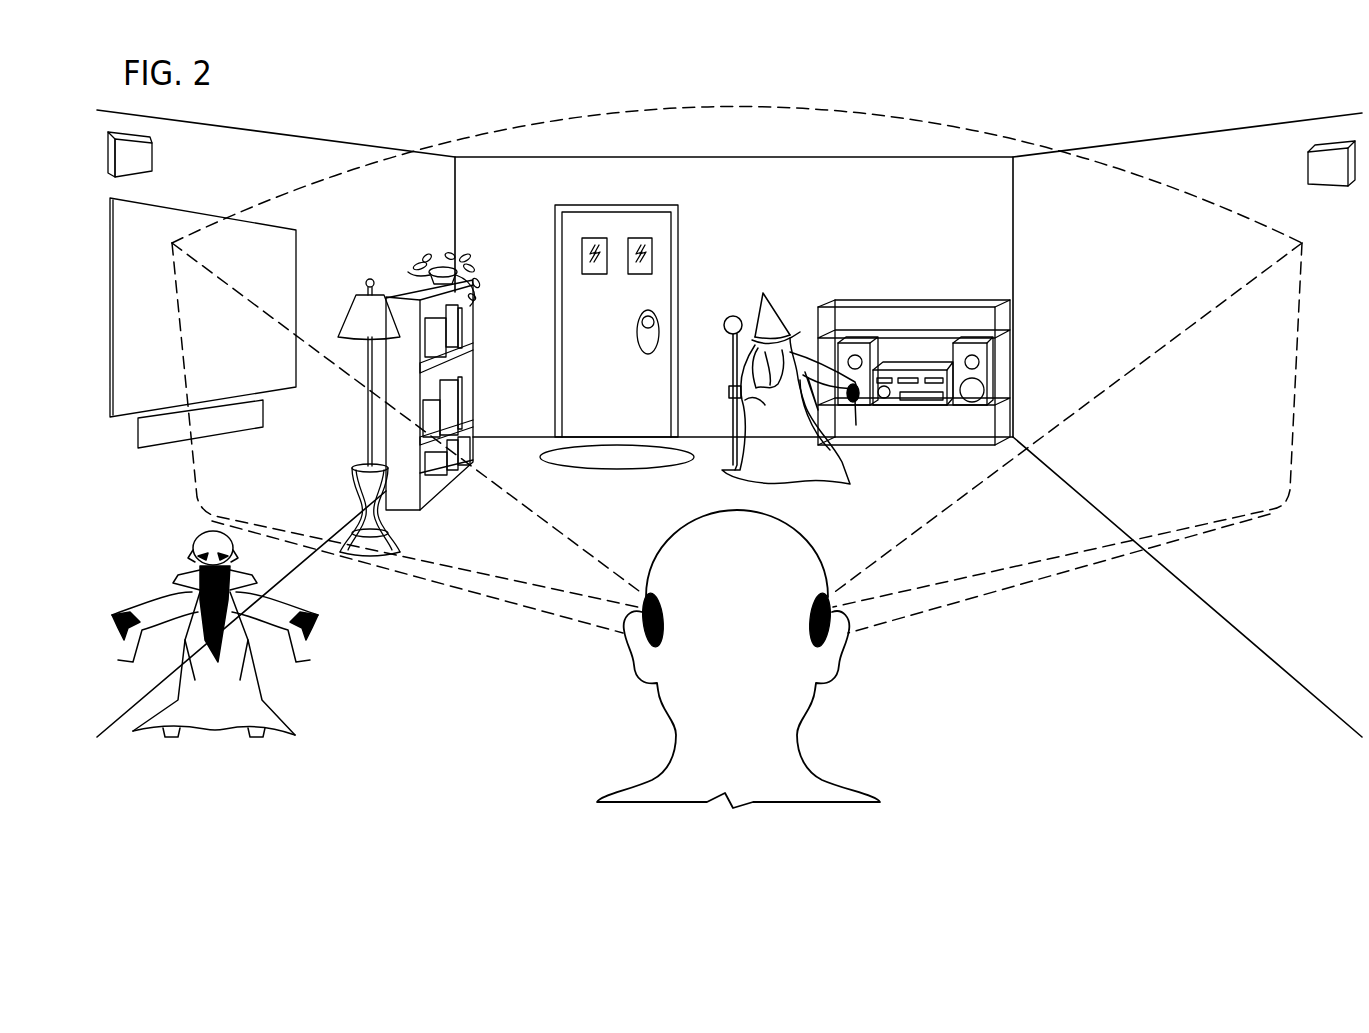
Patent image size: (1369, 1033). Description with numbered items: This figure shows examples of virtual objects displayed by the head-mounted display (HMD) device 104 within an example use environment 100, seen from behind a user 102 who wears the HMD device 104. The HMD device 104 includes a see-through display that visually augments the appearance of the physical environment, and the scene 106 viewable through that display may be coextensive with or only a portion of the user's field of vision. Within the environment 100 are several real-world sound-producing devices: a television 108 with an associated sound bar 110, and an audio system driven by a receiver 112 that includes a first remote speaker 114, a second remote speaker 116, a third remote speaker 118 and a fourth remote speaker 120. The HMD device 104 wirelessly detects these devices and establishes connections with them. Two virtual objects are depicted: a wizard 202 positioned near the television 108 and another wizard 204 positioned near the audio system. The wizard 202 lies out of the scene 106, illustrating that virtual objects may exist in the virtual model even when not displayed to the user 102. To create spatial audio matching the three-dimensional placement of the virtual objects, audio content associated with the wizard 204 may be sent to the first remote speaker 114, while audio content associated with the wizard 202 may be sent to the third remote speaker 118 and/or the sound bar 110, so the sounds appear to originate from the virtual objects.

The use environment 100 is at (897, 61).
The user 102 is at (803, 750).
The head-mounted display device 104 is at (833, 607).
The scene 106 is at (1188, 193).
The television 108 is at (275, 258).
The sound bar 110 is at (215, 425).
The receiver 112 is at (892, 407).
The first remote speaker 114 is at (864, 345).
The second remote speaker 116 is at (972, 350).
The third remote speaker 118 is at (150, 160).
The fourth remote speaker 120 is at (1328, 160).
The wizard 202 is at (257, 692).
The wizard 204 is at (808, 345).